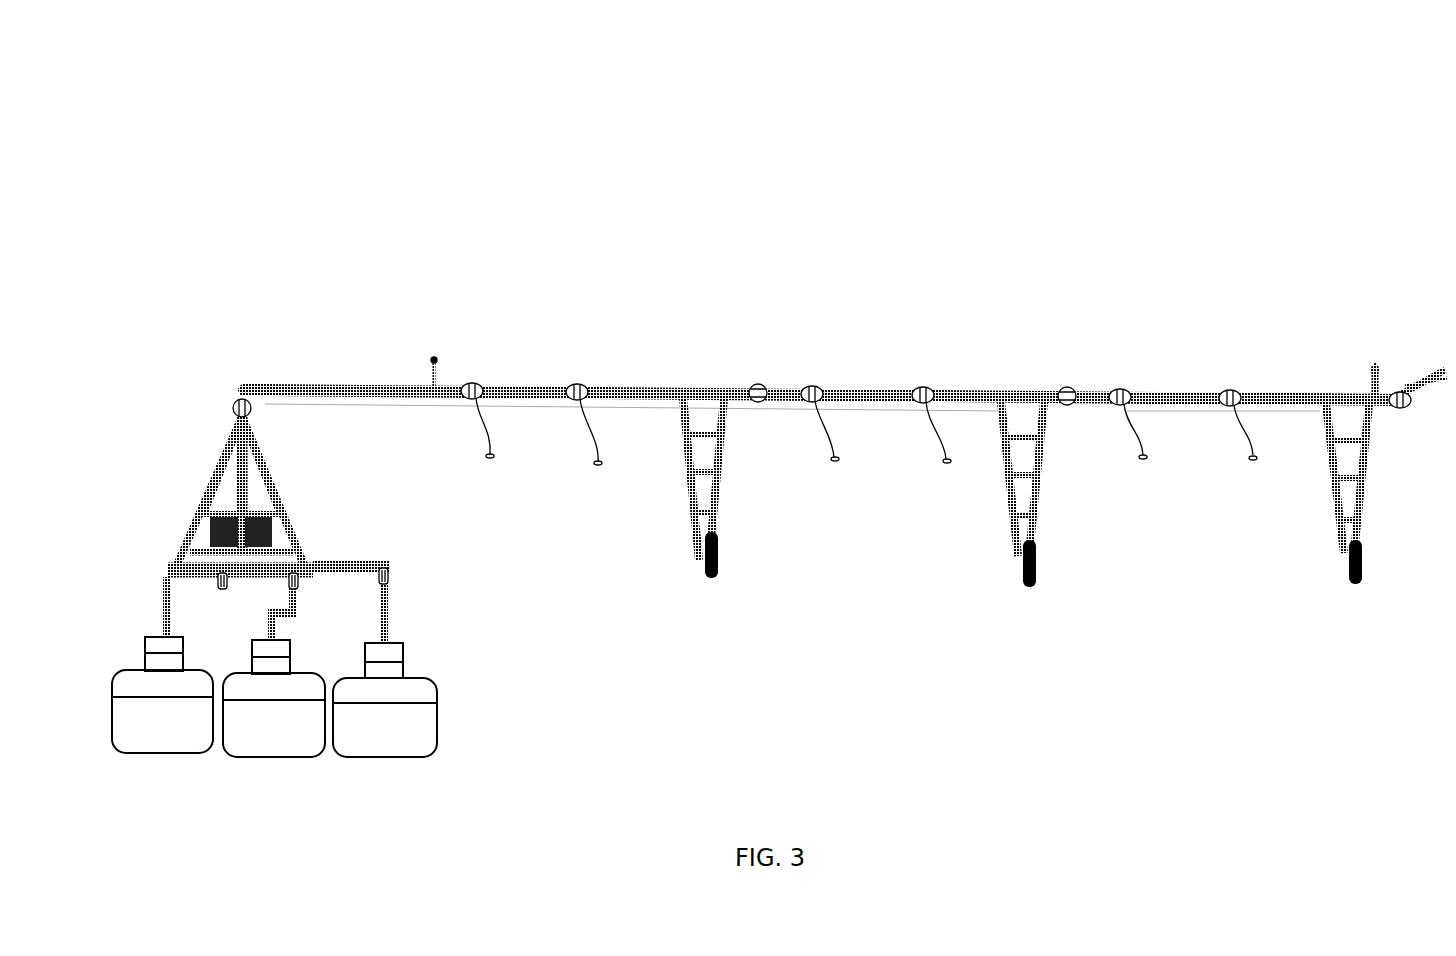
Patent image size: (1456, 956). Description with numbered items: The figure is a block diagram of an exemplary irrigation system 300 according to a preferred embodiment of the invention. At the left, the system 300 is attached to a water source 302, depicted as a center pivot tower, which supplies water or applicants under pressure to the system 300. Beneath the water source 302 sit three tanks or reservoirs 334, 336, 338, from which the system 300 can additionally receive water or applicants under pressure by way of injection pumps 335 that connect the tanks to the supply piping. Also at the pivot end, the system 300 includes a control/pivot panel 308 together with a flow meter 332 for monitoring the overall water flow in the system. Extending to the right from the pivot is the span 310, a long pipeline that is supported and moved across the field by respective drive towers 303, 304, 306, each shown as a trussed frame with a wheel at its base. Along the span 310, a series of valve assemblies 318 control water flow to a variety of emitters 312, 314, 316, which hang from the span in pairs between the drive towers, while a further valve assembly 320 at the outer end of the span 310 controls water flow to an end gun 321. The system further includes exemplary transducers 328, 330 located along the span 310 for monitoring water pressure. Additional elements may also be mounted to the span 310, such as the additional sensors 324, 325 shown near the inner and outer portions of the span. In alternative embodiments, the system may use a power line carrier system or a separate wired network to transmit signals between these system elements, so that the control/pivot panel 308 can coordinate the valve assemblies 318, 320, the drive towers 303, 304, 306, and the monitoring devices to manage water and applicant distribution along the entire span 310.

The system 300 is at (846, 50).
The water source 302 is at (168, 524).
The drive tower 303 is at (694, 496).
The drive tower 304 is at (1010, 497).
The drive tower 306 is at (1337, 500).
The control/pivot panel 308 is at (272, 516).
The span 310 is at (262, 386).
The emitter 312 is at (492, 457).
The emitter 314 is at (947, 463).
The emitter 316 is at (1253, 459).
The valve assembly 318 is at (238, 404).
The valve assembly 320 is at (1408, 380).
The end gun 321 is at (1408, 404).
The sensor 324 is at (434, 356).
The sensor 325 is at (1375, 367).
The transducer 328 is at (758, 384).
The transducer 330 is at (1067, 387).
The flow meter 332 is at (207, 517).
The tank 334 is at (163, 728).
The injection pump 335 is at (226, 590).
The tank 336 is at (270, 737).
The tank 338 is at (387, 738).